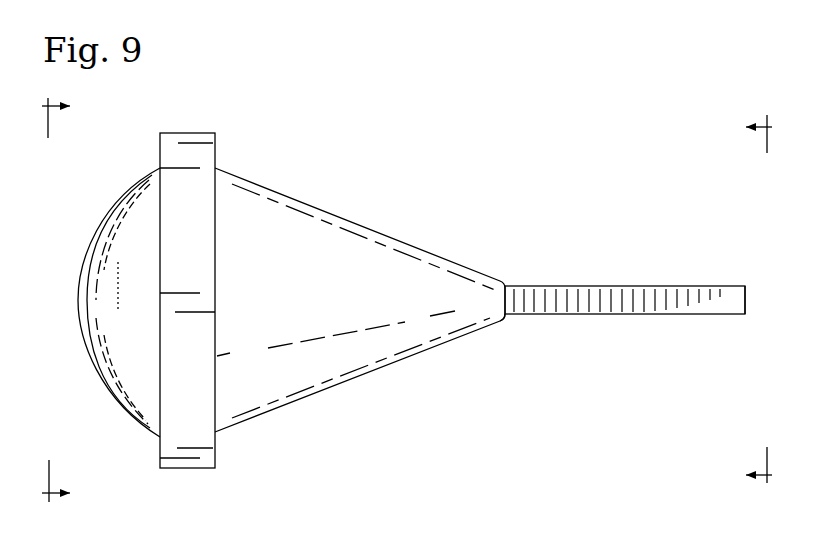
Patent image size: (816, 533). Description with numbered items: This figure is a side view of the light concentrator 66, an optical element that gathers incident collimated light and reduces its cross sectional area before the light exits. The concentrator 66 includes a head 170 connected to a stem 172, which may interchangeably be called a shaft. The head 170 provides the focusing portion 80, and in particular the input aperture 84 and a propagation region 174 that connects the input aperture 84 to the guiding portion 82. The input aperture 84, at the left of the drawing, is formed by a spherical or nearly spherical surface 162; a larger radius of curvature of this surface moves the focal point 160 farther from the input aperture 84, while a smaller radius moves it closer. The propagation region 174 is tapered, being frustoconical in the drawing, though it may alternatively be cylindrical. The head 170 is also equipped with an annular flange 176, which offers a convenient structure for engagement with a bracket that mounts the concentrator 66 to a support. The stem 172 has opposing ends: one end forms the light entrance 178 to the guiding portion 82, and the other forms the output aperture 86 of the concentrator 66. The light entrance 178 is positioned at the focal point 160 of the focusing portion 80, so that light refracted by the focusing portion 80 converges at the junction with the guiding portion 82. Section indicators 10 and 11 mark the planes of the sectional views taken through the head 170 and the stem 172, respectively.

The section line for FIG. 10 is at (77, 300).
The section line for FIG. 11 is at (736, 301).
The light concentrator 66 is at (362, 292).
The focusing portion 80 is at (362, 292).
The guiding portion 82 is at (642, 302).
The input aperture 84 is at (94, 302).
The output aperture 86 is at (747, 300).
The focal point 160 is at (497, 296).
The spherical surface 162 is at (88, 227).
The head 170 is at (236, 175).
The stem 172 is at (660, 316).
The propagation region 174 is at (338, 216).
The annular flange 176 is at (185, 133).
The light entrance 178 is at (496, 320).